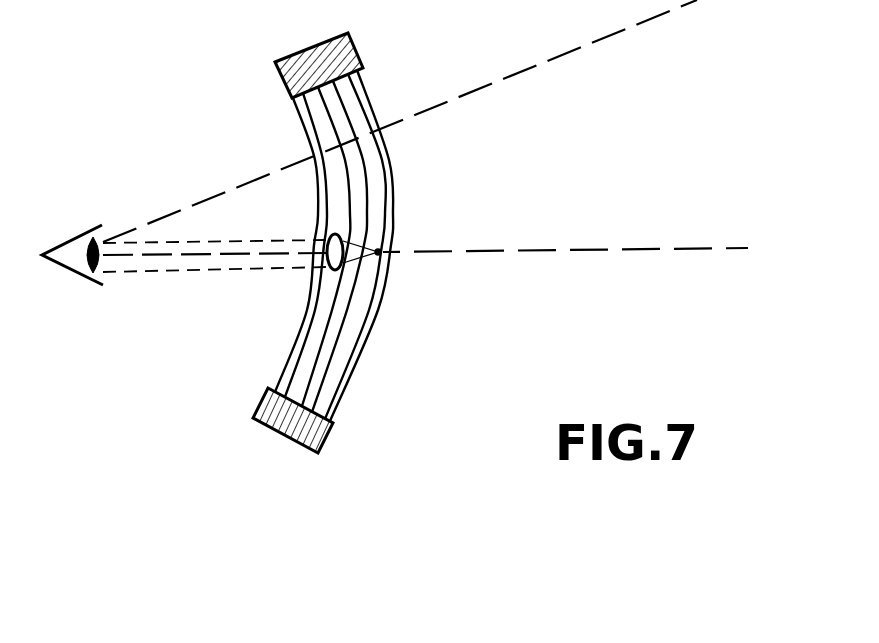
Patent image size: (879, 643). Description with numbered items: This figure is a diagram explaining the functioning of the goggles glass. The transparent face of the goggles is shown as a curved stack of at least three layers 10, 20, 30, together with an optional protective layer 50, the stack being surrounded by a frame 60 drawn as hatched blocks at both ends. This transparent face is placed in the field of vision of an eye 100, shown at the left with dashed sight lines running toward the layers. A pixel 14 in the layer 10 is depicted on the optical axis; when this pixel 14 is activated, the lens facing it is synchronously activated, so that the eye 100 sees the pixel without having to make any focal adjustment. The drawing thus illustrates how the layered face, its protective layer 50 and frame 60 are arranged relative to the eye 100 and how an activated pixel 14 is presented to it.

The layer 10 is at (368, 272).
The pixel 14 is at (380, 234).
The layer 20 is at (340, 317).
The layer 30 is at (317, 335).
The protective layer 50 is at (350, 363).
The frame 60 is at (360, 50).
The eye 100 is at (72, 258).